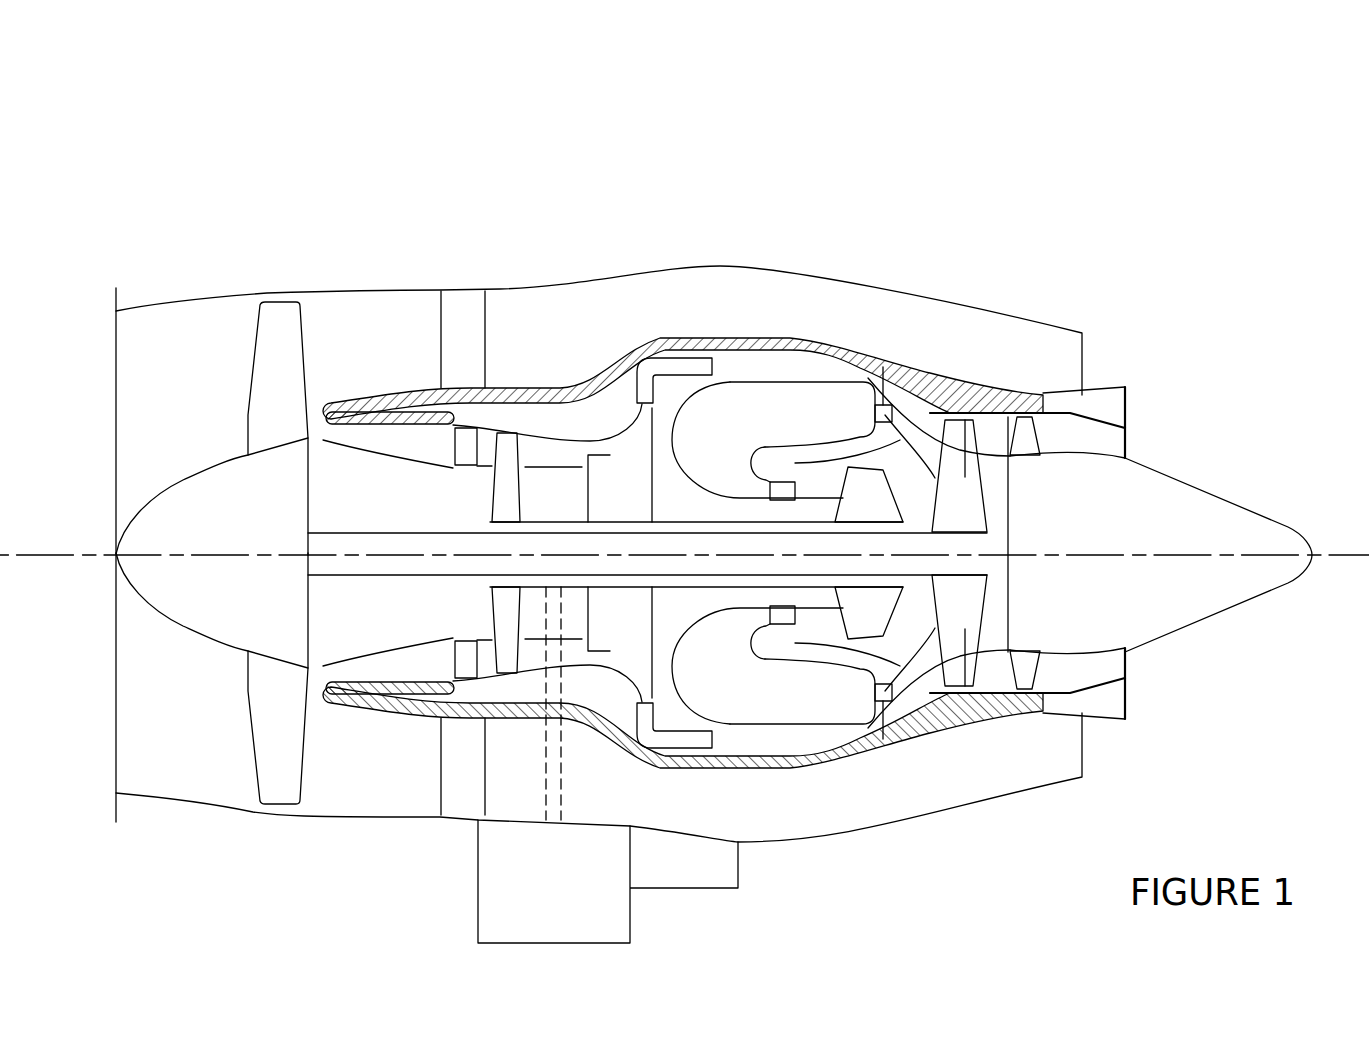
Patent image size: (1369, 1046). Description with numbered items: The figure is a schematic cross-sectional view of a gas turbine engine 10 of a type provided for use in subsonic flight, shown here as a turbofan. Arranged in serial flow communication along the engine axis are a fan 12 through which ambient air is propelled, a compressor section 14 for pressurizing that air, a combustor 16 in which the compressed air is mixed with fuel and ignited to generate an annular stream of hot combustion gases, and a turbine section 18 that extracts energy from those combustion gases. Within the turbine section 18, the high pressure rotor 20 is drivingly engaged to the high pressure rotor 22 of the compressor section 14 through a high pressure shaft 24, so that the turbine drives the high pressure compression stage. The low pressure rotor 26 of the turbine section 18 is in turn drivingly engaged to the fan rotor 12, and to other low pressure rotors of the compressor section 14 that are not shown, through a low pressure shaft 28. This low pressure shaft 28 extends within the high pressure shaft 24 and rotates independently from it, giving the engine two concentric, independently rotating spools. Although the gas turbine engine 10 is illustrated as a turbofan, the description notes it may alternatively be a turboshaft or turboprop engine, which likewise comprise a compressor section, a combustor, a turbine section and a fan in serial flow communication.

The gas turbine engine 10 is at (940, 194).
The fan 12 is at (273, 717).
The compressor section 14 is at (542, 448).
The combustor 16 is at (775, 405).
The turbine section 18 is at (912, 625).
The high pressure rotor 20 is at (878, 482).
The high pressure rotor 22 is at (620, 475).
The high pressure shaft 24 is at (778, 522).
The low pressure rotor 26 is at (978, 390).
The low pressure shaft 28 is at (373, 577).